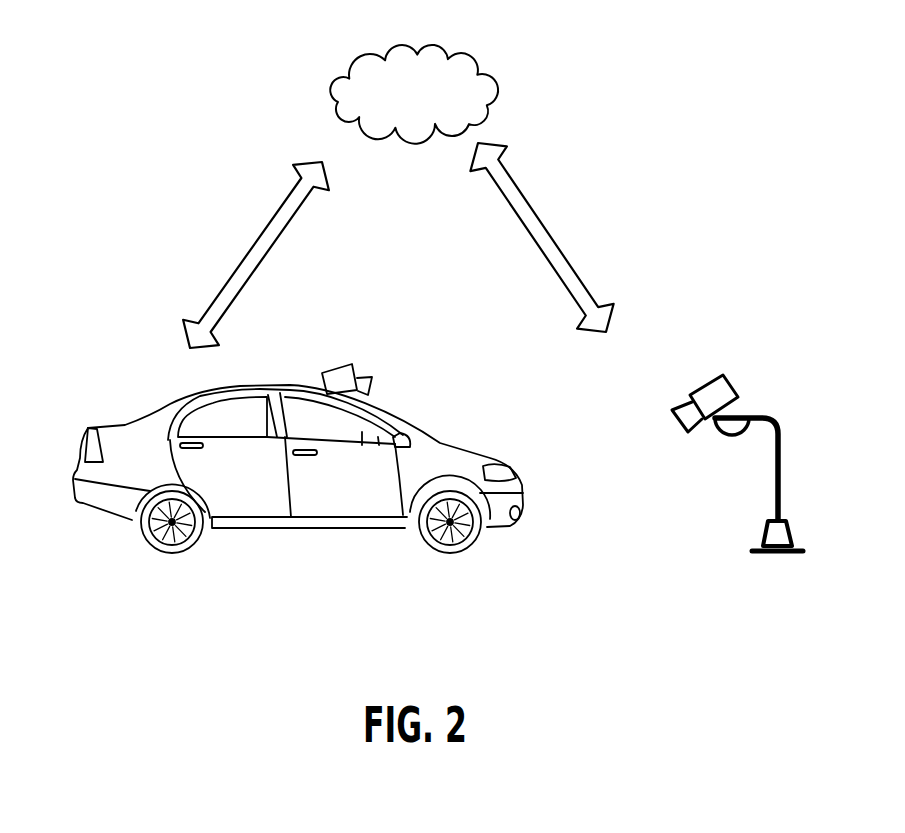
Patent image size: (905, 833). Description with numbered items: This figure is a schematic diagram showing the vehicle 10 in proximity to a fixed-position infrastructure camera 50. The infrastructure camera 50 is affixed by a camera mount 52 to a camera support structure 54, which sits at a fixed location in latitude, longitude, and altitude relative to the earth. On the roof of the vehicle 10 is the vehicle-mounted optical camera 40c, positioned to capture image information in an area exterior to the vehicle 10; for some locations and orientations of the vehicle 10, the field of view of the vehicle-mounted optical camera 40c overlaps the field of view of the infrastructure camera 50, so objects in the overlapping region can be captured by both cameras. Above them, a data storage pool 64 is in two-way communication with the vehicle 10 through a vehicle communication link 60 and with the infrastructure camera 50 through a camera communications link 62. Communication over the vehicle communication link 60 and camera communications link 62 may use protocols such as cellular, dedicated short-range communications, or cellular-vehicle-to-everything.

The vehicle 10 is at (83, 455).
The vehicle-mounted optical camera 40c is at (348, 363).
The infrastructure camera 50 is at (702, 389).
The camera mount 52 is at (714, 423).
The camera support structure 54 is at (765, 414).
The vehicle communication link 60 is at (252, 235).
The camera communications link 62 is at (557, 235).
The data storage pool 64 is at (432, 108).